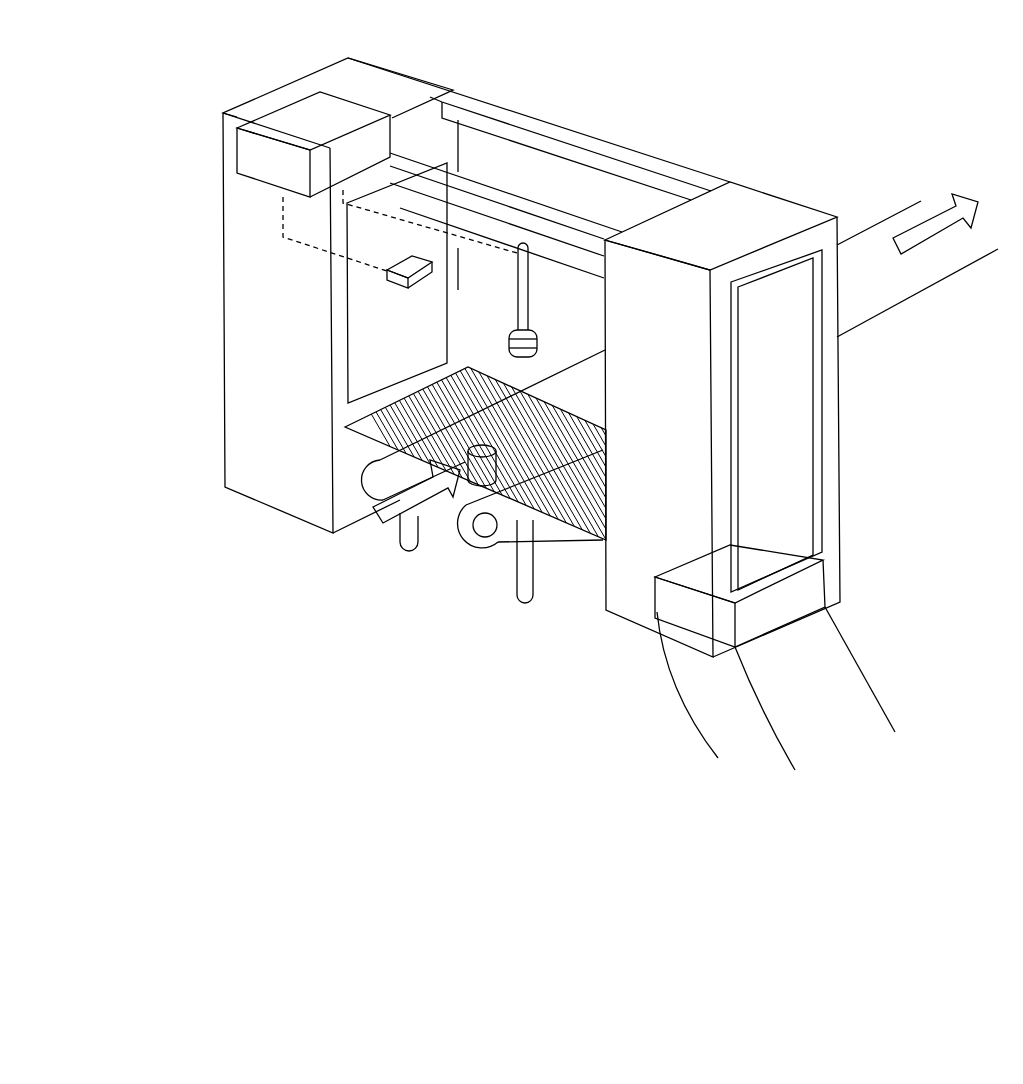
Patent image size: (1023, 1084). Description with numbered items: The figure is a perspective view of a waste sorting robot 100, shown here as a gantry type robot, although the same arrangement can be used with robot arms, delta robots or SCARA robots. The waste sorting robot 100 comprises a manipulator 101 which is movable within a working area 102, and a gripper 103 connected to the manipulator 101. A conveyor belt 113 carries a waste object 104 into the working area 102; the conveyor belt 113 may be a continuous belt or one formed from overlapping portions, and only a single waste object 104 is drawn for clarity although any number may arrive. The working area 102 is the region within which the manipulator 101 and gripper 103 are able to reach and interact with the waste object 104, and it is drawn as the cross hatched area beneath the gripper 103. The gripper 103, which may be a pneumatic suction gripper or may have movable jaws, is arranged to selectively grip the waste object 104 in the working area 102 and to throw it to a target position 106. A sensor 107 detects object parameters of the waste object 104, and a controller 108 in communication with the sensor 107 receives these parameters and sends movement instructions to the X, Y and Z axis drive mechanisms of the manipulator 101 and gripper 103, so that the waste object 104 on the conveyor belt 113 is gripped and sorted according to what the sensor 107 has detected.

The waste sorting robot 100 is at (186, 74).
The manipulator 101 is at (523, 262).
The working area 102 is at (447, 448).
The gripper 103 is at (540, 345).
The waste object 104 is at (477, 477).
The target position 106 is at (690, 580).
The sensor 107 is at (400, 275).
The controller 108 is at (248, 172).
The conveyor belt 113 is at (377, 487).